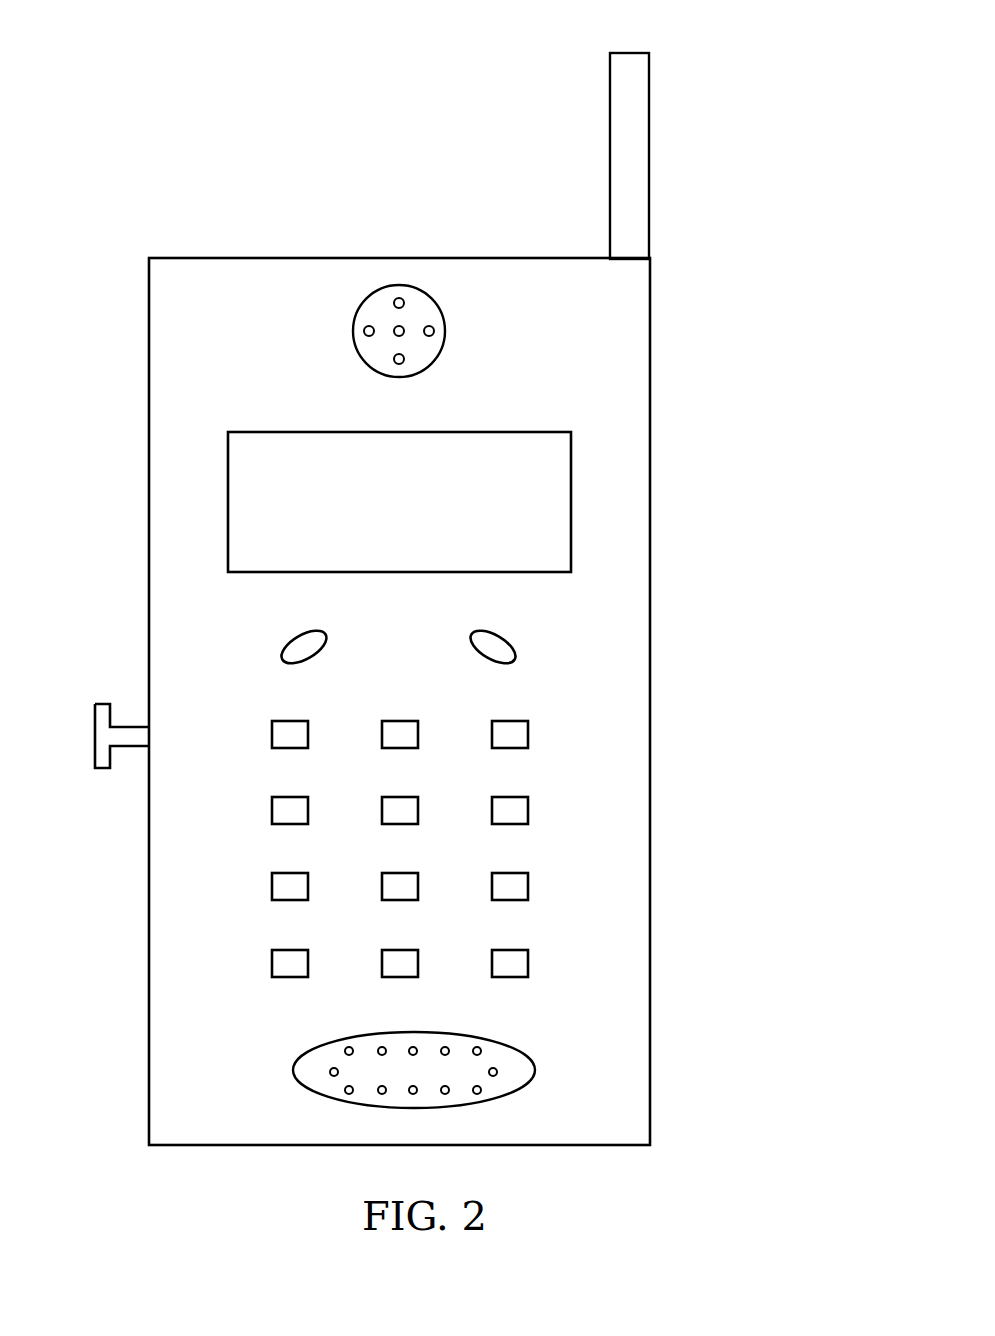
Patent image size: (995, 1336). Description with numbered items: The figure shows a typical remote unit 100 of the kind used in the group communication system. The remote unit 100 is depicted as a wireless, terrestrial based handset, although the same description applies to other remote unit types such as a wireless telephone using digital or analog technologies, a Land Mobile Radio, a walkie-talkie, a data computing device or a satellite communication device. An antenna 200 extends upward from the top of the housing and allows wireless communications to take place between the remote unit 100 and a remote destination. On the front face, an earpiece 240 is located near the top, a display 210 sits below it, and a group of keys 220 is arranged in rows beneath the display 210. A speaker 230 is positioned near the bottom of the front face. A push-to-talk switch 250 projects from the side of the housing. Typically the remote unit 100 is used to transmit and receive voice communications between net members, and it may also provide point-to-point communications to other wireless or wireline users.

The remote unit 100 is at (798, 233).
The antenna 200 is at (640, 53).
The display 210 is at (524, 432).
The keys 220 is at (590, 698).
The speaker 230 is at (526, 1050).
The earpiece 240 is at (438, 305).
The push-to-talk switch 250 is at (103, 704).